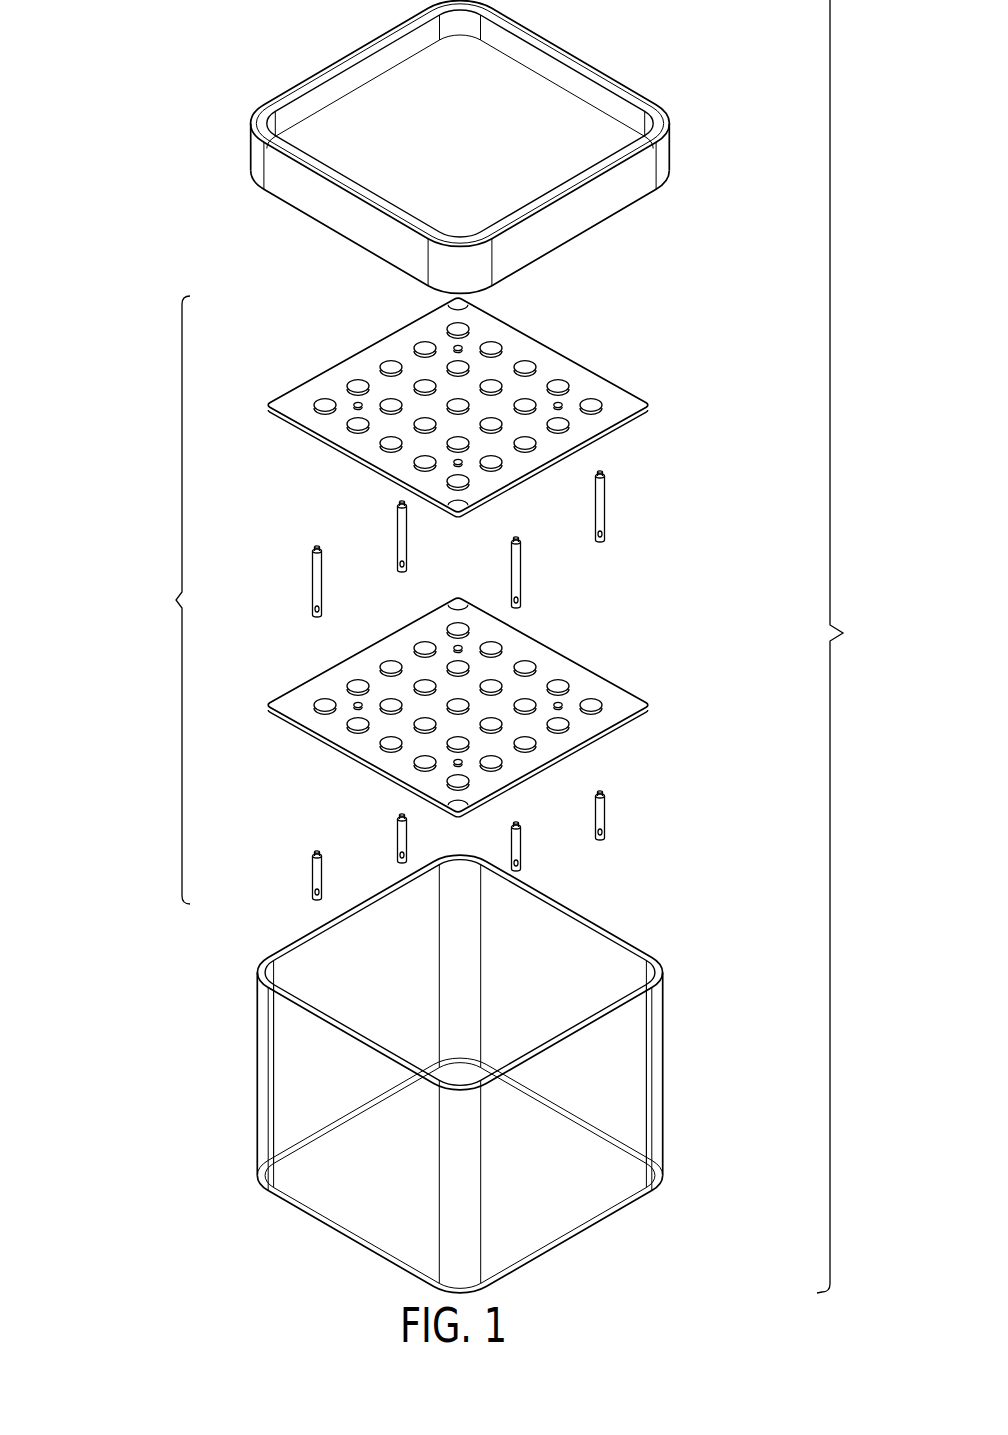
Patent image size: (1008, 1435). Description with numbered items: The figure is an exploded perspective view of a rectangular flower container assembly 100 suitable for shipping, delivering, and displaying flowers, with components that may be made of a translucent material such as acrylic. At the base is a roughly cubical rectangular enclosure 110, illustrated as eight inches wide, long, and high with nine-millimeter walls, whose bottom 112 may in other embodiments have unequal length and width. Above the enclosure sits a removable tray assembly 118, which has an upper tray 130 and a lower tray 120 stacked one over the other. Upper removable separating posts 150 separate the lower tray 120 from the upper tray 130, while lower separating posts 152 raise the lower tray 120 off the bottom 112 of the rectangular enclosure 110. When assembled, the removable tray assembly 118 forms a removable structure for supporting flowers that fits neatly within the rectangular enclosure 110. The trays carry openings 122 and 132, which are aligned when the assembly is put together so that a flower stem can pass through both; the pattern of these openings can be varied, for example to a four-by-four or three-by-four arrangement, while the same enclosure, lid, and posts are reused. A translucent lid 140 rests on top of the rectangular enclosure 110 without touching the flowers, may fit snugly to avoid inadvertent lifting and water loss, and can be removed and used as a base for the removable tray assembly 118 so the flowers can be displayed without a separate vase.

The flower container assembly 100 is at (178, 82).
The rectangular enclosure 110 is at (488, 1074).
The bottom 112 is at (388, 1213).
The removable tray assembly 118 is at (140, 498).
The lower tray 120 is at (490, 707).
The openings 122 is at (592, 700).
The upper tray 130 is at (488, 407).
The openings 132 is at (592, 402).
The lid 140 is at (670, 154).
The upper removable separating posts 150 is at (312, 578).
The lower separating posts 152 is at (312, 880).